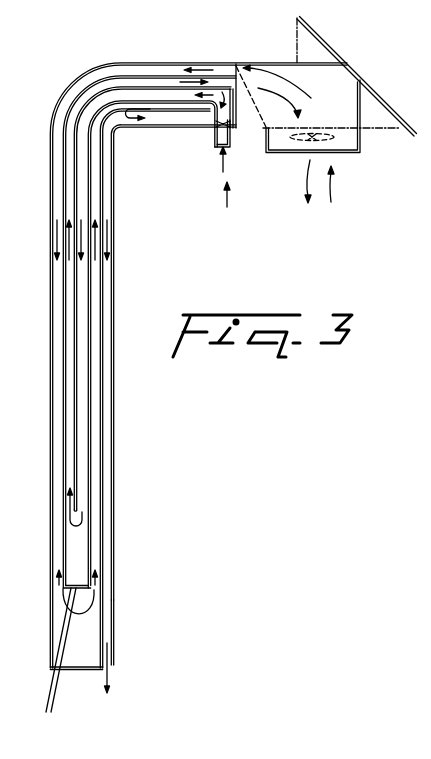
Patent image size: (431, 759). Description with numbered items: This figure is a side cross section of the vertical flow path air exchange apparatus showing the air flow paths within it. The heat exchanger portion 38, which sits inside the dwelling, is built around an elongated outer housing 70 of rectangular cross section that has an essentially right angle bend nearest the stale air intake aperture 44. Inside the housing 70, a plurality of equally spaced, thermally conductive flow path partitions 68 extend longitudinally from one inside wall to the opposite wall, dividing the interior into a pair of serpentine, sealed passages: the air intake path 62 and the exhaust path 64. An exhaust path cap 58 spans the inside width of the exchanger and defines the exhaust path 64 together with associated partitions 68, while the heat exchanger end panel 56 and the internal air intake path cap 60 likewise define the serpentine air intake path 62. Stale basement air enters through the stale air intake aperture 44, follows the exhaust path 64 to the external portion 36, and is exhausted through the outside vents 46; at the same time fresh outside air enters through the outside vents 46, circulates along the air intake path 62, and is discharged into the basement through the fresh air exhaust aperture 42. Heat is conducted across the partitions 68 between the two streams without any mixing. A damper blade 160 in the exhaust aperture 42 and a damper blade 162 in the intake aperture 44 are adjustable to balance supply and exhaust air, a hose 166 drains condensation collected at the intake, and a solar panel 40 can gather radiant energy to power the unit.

The external portion 36 is at (278, 52).
The heat exchanger portion 38 is at (33, 447).
The solar panel 40 is at (322, 35).
The fresh air exhaust aperture 42 is at (110, 670).
The stale air intake aperture 44 is at (232, 135).
The outside vents 46 is at (336, 152).
The heat exchanger end panel 56 is at (77, 670).
The exhaust path cap 58 is at (83, 592).
The internal air intake path cap 60 is at (203, 115).
The air intake path 62 is at (50, 335).
The exhaust path 64 is at (68, 352).
The flow path partitions 68 is at (73, 300).
The outer housing 70 is at (52, 525).
The damper blade 160 is at (110, 630).
The damper blade 162 is at (214, 122).
The hose 166 is at (58, 688).